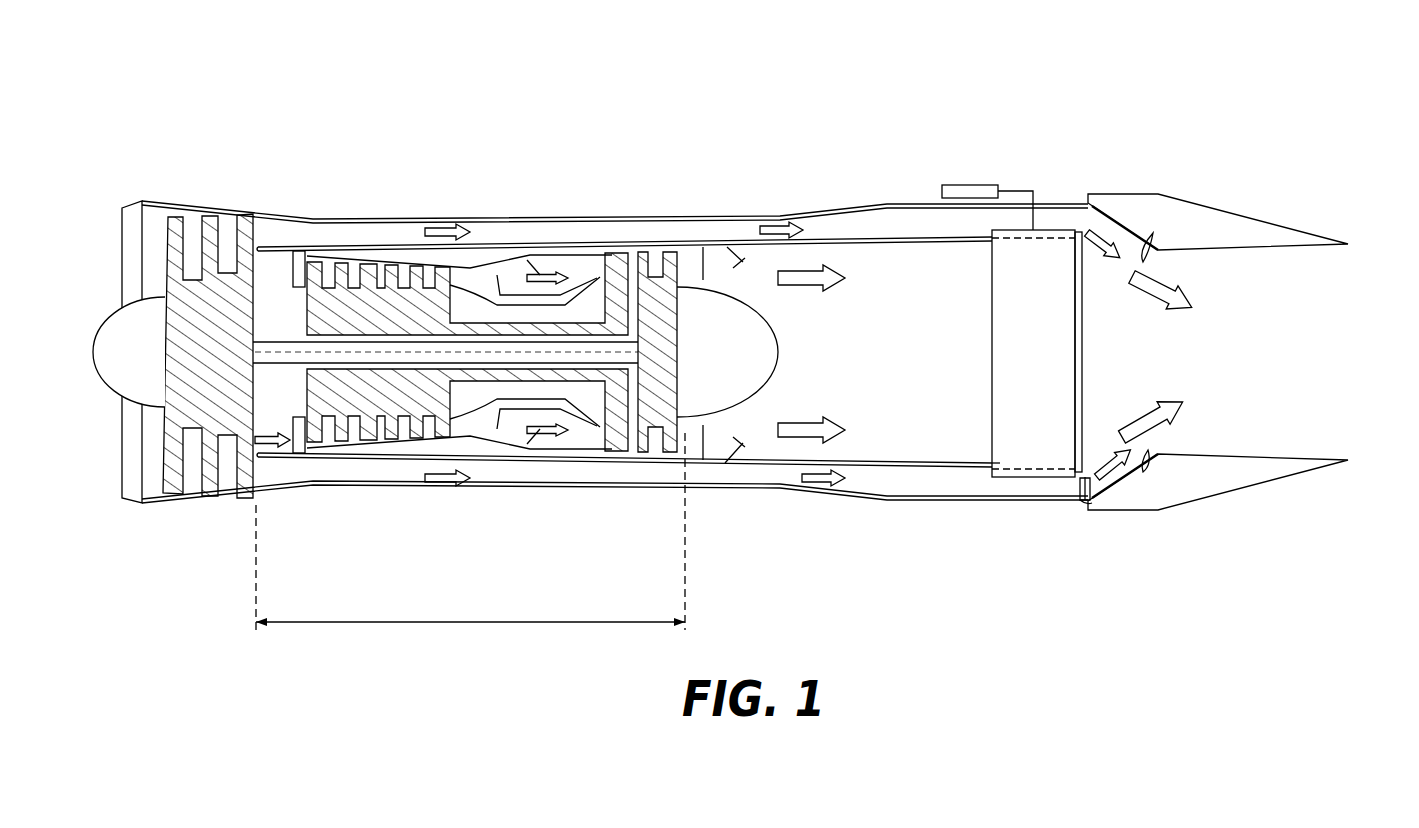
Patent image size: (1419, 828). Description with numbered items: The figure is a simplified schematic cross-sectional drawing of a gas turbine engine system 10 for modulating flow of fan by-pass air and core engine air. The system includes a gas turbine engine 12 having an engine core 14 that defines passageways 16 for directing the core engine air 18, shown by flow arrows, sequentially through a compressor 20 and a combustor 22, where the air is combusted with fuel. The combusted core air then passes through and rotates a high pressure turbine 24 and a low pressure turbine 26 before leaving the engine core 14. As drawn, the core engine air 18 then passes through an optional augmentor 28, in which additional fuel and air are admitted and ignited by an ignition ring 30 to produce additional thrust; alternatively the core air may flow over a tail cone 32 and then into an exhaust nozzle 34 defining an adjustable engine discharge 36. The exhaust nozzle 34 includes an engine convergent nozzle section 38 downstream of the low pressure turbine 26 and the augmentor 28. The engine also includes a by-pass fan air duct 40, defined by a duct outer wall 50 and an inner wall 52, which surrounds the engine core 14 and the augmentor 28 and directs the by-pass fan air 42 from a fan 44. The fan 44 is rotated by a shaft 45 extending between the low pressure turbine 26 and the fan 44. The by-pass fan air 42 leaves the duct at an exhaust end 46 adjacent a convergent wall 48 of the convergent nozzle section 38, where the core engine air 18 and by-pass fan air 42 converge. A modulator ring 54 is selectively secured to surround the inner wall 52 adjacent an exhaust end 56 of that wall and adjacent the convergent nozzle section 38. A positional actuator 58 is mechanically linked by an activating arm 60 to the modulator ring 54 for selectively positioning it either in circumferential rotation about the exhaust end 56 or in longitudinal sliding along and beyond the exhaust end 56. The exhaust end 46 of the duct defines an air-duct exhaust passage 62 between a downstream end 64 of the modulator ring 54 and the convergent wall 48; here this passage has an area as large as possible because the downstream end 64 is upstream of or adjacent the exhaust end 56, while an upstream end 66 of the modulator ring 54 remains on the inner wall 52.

The gas turbine engine system 10 is at (1040, 95).
The gas turbine engine 12 is at (430, 190).
The engine core 14 is at (402, 622).
The passageways 16 is at (272, 262).
The core engine air 18 is at (573, 275).
The compressor 20 is at (400, 262).
The combustor 22 is at (522, 272).
The high pressure turbine 24 is at (632, 452).
The low pressure turbine 26 is at (685, 247).
The augmentor 28 is at (923, 440).
The ignition ring 30 is at (712, 465).
The tail cone 32 is at (778, 352).
The exhaust nozzle 34 is at (1240, 215).
The adjustable engine discharge 36 is at (1300, 333).
The engine convergent nozzle section 38 is at (1105, 215).
The by-pass fan air duct 40 is at (360, 232).
The by-pass fan air 42 is at (470, 232).
The fan 44 is at (162, 218).
The shaft 45 is at (300, 470).
The exhaust end of the fan air duct 46 is at (1080, 505).
The convergent wall 48 is at (1153, 240).
The duct outer wall 50 is at (635, 247).
The inner wall 52 is at (977, 467).
The modulator ring 54 is at (990, 297).
The exhaust end of the inner wall 56 is at (1083, 353).
The positional actuator 58 is at (962, 185).
The activating arm 60 is at (1023, 190).
The air-duct exhaust passage 62 is at (1043, 507).
The downstream end of the modulator ring 64 is at (1085, 490).
The upstream end of the modulator ring 66 is at (992, 362).